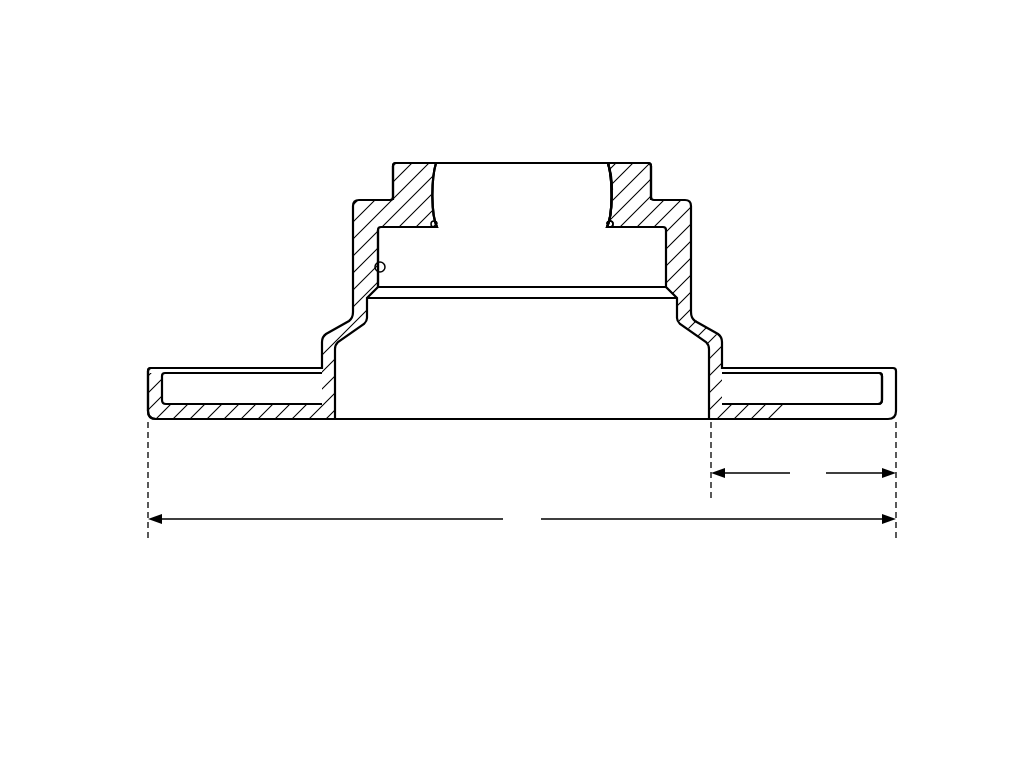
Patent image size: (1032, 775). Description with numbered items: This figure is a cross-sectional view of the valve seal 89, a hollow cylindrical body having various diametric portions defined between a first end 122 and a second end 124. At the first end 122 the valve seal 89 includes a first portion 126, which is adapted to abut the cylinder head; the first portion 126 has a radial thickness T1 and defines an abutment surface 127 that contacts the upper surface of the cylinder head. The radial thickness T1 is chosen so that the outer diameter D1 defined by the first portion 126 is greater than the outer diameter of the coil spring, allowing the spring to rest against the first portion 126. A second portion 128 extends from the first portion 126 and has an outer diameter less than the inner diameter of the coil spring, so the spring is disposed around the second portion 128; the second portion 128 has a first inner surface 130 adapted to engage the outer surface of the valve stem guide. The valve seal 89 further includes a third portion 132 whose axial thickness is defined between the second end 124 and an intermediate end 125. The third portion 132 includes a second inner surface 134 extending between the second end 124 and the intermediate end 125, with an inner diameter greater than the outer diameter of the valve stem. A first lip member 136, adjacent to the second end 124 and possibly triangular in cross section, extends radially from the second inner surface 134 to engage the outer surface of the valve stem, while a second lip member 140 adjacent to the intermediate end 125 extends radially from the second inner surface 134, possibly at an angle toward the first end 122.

The valve seal 89 is at (806, 85).
The first end 122 is at (130, 403).
The second end 124 is at (636, 146).
The intermediate end 125 is at (455, 216).
The first portion 126 is at (832, 405).
The abutment surface 127 is at (233, 421).
The second portion 128 is at (732, 265).
The first inner surface 130 is at (375, 270).
The third portion 132 is at (674, 175).
The second inner surface 134 is at (611, 191).
The first lip member 136 is at (606, 175).
The second lip member 140 is at (605, 224).
The outer diameter D1 is at (522, 481).
The radial thickness T1 is at (803, 460).